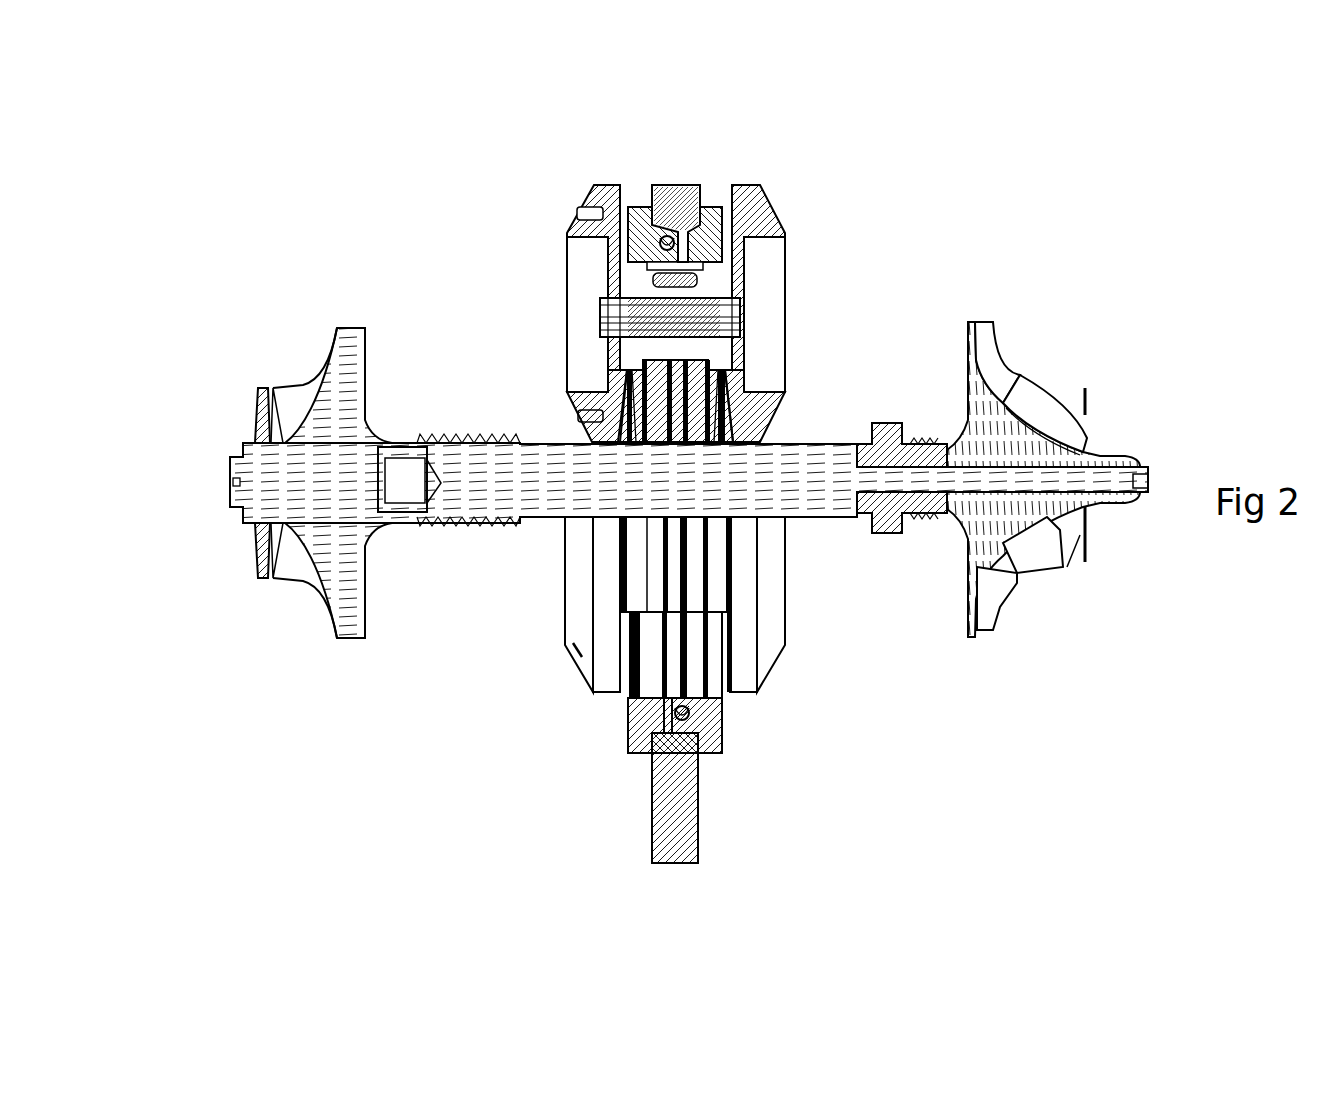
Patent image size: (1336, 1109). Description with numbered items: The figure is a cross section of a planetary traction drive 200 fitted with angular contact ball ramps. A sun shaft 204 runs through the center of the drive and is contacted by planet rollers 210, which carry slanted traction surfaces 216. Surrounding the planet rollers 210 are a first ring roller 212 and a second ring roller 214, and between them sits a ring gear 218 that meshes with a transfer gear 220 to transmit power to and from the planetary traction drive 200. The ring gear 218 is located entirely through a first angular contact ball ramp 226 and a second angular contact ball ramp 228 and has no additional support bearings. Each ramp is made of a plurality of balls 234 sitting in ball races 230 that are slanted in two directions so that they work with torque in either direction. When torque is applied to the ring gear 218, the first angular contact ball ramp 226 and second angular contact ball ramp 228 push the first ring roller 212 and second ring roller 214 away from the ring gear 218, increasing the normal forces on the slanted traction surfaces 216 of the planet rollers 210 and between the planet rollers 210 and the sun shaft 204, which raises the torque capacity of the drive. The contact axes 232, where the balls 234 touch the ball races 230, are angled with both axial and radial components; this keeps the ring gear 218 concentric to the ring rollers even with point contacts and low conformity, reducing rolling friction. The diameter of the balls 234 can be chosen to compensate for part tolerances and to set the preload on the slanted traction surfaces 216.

The planetary traction drive 200 is at (275, 243).
The sun shaft 204 is at (497, 477).
The planet rollers 210 is at (767, 335).
The first ring roller 212 is at (642, 202).
The second ring roller 214 is at (702, 202).
The slanted traction surfaces 216 is at (640, 440).
The ring gear 218 is at (630, 752).
The transfer gear 220 is at (682, 803).
The first angular contact ball ramp 226 is at (660, 717).
The second angular contact ball ramp 228 is at (700, 768).
The ball races 230 is at (1030, 705).
The contact axes 232 is at (955, 765).
The balls 234 is at (660, 248).